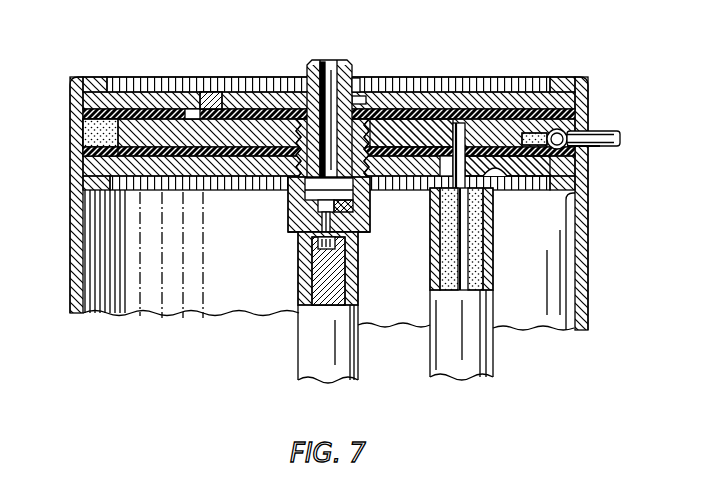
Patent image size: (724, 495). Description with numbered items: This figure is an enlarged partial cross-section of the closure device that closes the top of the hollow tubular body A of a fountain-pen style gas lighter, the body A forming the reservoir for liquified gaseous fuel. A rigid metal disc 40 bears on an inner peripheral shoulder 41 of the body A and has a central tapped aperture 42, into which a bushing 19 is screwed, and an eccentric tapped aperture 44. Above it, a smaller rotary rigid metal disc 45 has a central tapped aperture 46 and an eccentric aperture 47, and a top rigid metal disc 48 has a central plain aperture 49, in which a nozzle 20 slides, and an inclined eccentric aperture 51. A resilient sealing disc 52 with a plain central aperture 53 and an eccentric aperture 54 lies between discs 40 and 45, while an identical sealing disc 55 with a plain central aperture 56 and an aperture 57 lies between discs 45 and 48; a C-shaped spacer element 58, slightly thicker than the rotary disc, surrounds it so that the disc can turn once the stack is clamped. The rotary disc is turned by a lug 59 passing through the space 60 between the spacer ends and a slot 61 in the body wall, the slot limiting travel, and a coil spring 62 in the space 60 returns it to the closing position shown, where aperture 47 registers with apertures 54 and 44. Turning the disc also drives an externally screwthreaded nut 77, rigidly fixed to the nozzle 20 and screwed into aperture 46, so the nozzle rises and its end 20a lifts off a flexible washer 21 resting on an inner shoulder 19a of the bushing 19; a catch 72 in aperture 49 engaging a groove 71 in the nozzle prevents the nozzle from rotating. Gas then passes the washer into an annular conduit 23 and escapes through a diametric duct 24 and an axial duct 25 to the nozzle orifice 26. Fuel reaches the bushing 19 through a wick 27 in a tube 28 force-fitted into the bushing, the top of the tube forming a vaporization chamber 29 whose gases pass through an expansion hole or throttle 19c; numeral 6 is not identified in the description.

The filter tube 6 is at (494, 268).
The bushing 19 is at (290, 258).
The inner shoulder 19a is at (352, 218).
The expansion hole or throttle 19c is at (335, 230).
The nozzle 20 is at (358, 56).
The nozzle end 20a is at (300, 258).
The washer 21 is at (300, 232).
The annular conduit 23 is at (377, 202).
The diametric duct 24 is at (296, 206).
The axial duct 25 is at (318, 62).
The nozzle orifice 26 is at (335, 62).
The wick 27 is at (356, 293).
The tube 28 is at (360, 350).
The vaporization chamber 29 is at (338, 242).
The rigid metal disc 40 is at (95, 180).
The inner peripheral shoulder 41 is at (555, 190).
The central tapped aperture 42 is at (290, 182).
The eccentric tapped aperture 44 is at (512, 186).
The rotary rigid metal disc 45 is at (117, 128).
The central tapped aperture 46 is at (277, 140).
The eccentric aperture 47 is at (465, 130).
The rigid metal disc 48 is at (95, 95).
The central plain aperture 49 is at (298, 120).
The eccentric aperture 51 is at (208, 100).
The sealing disc 52 is at (97, 163).
The plain central aperture 53 is at (235, 178).
The eccentric aperture 54 is at (487, 140).
The sealing disc 55 is at (123, 117).
The plain central aperture 56 is at (400, 135).
The aperture 57 is at (190, 110).
The C-shaped spacer element 58 is at (88, 143).
The lug 59 is at (624, 138).
The space 60 is at (570, 95).
The slot 61 is at (590, 132).
The coil spring 62 is at (594, 146).
The groove or slot 71 is at (358, 78).
The catch 72 is at (360, 100).
The externally screwthreaded nut 77 is at (453, 128).
The hollow tubular body A is at (598, 306).